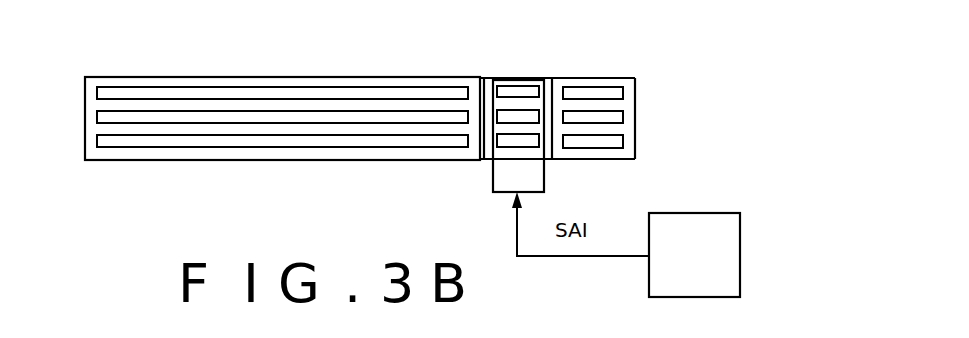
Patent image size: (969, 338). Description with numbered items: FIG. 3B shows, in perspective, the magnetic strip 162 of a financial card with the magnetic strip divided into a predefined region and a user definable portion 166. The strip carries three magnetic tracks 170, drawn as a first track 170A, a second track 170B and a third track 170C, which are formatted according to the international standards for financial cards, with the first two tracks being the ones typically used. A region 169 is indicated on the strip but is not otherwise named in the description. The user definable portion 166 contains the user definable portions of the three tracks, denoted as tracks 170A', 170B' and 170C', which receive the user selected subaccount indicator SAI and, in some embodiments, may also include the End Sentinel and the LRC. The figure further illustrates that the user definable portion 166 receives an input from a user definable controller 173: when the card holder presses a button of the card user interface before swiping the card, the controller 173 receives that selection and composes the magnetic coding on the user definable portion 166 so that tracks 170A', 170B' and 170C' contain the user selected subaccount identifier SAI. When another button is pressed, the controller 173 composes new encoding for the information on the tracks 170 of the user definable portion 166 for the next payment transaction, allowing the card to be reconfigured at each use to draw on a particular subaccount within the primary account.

The magnetic strip 162 is at (152, 78).
The electrode pattern 169 is at (340, 82).
The magnetic tracks 170 is at (265, 123).
The user definable portion of track 170A 170A' is at (534, 49).
The user definable portion of track 170B 170B' is at (573, 73).
The user definable portion of track 170C 170C' is at (457, 168).
The track 1 170A is at (654, 75).
The track 2 170B is at (663, 104).
The track 3 170C is at (654, 136).
The user definable portion 166 is at (530, 172).
The user definable controller 173 is at (740, 256).